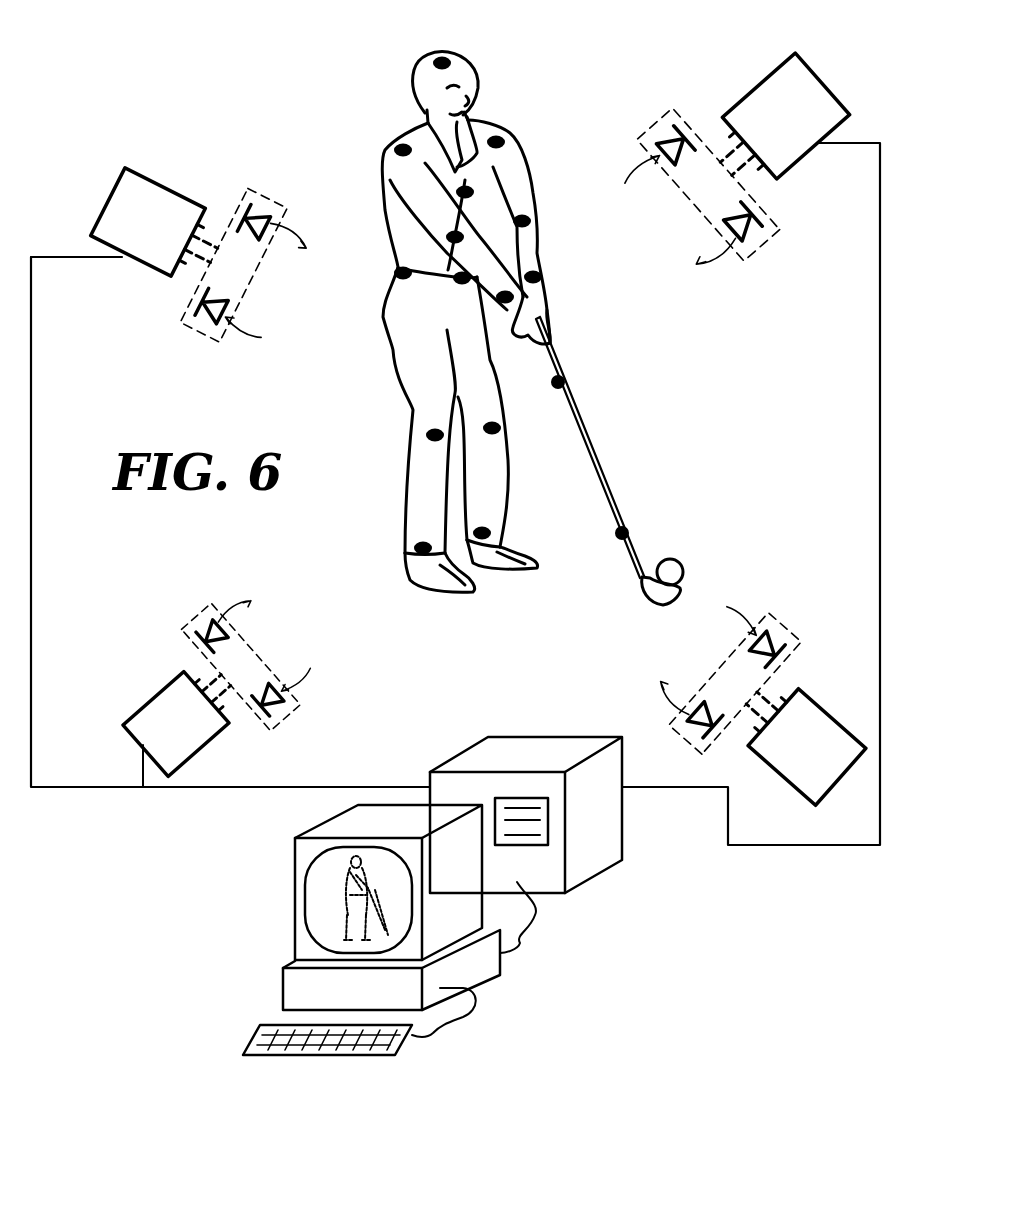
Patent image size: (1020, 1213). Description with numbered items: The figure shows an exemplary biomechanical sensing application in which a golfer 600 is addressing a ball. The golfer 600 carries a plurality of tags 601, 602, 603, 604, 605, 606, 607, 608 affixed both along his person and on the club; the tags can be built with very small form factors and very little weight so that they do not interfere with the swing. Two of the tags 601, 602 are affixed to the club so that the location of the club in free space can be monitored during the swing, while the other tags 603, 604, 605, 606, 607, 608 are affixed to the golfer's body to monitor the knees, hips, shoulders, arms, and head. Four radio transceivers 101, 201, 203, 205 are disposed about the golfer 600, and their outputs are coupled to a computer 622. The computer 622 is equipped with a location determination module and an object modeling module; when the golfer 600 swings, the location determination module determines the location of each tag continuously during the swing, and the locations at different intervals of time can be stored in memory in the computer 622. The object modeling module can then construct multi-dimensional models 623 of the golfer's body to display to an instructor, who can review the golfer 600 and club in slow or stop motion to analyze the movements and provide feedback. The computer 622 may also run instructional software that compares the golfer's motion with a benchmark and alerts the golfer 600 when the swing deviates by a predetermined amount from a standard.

The radio transceiver 101 is at (172, 715).
The radio transceiver 201 is at (138, 212).
The radio transceiver 203 is at (785, 117).
The radio transceiver 205 is at (807, 735).
The golfer 600 is at (413, 83).
The tag 601 is at (630, 533).
The tag 602 is at (565, 385).
The tag 603 is at (543, 272).
The tag 604 is at (530, 221).
The tag 605 is at (500, 137).
The tag 606 is at (400, 271).
The tag 607 is at (448, 234).
The tag 608 is at (440, 55).
The computer 622 is at (293, 887).
The multi-dimensional model 623 is at (347, 902).